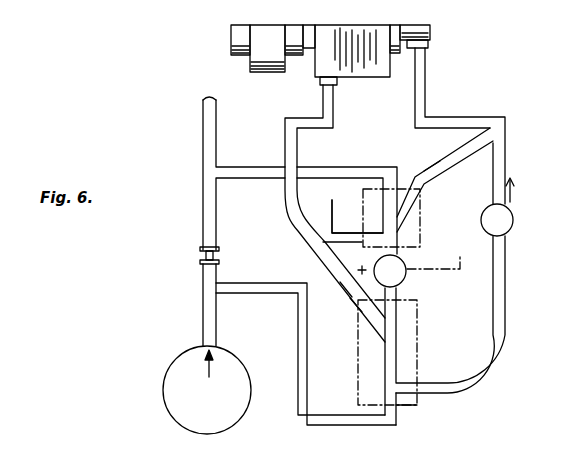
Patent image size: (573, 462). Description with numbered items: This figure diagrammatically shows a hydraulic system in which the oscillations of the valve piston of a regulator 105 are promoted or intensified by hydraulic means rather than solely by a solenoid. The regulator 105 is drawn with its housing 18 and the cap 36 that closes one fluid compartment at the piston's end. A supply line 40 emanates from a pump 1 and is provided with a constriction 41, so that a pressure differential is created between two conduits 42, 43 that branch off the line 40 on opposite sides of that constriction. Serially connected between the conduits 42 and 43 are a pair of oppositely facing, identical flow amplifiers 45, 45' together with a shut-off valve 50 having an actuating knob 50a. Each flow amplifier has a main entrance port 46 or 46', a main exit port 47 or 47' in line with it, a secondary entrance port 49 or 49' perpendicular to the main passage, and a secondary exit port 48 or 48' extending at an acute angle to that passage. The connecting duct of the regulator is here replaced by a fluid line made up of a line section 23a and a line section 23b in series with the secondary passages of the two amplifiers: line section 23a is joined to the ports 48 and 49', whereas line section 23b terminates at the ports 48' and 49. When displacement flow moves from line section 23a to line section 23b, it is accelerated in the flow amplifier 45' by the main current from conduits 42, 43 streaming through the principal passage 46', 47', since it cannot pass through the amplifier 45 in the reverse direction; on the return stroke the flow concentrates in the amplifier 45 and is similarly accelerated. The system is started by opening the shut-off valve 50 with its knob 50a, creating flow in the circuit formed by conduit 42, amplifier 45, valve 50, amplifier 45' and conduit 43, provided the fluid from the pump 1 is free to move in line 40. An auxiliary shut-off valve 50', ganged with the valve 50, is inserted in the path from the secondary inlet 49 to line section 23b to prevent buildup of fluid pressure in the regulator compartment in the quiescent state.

The pump 1 is at (190, 355).
The housing 18 is at (373, 70).
The line section 23a is at (298, 162).
The line section 23b is at (426, 89).
The cap 36 is at (432, 35).
The supply line 40 is at (203, 320).
The constriction 41 is at (206, 257).
The conduit 42 is at (298, 394).
The conduit 43 is at (235, 172).
The flow amplifier 45 is at (367, 352).
The flow amplifier 45' is at (396, 218).
The main entrance port 46 is at (410, 420).
The main entrance port 46' is at (433, 256).
The main exit port 47 is at (333, 296).
The main exit port 47' is at (445, 180).
The secondary exit port 48 is at (341, 322).
The secondary exit port 48' is at (451, 174).
The secondary entrance port 49 is at (445, 330).
The secondary entrance port 49' is at (315, 218).
The shut-off valve 50 is at (417, 278).
The auxiliary shut-off valve 50' is at (510, 207).
The actuating knob 50a is at (373, 268).
The regulator 105 is at (228, 40).